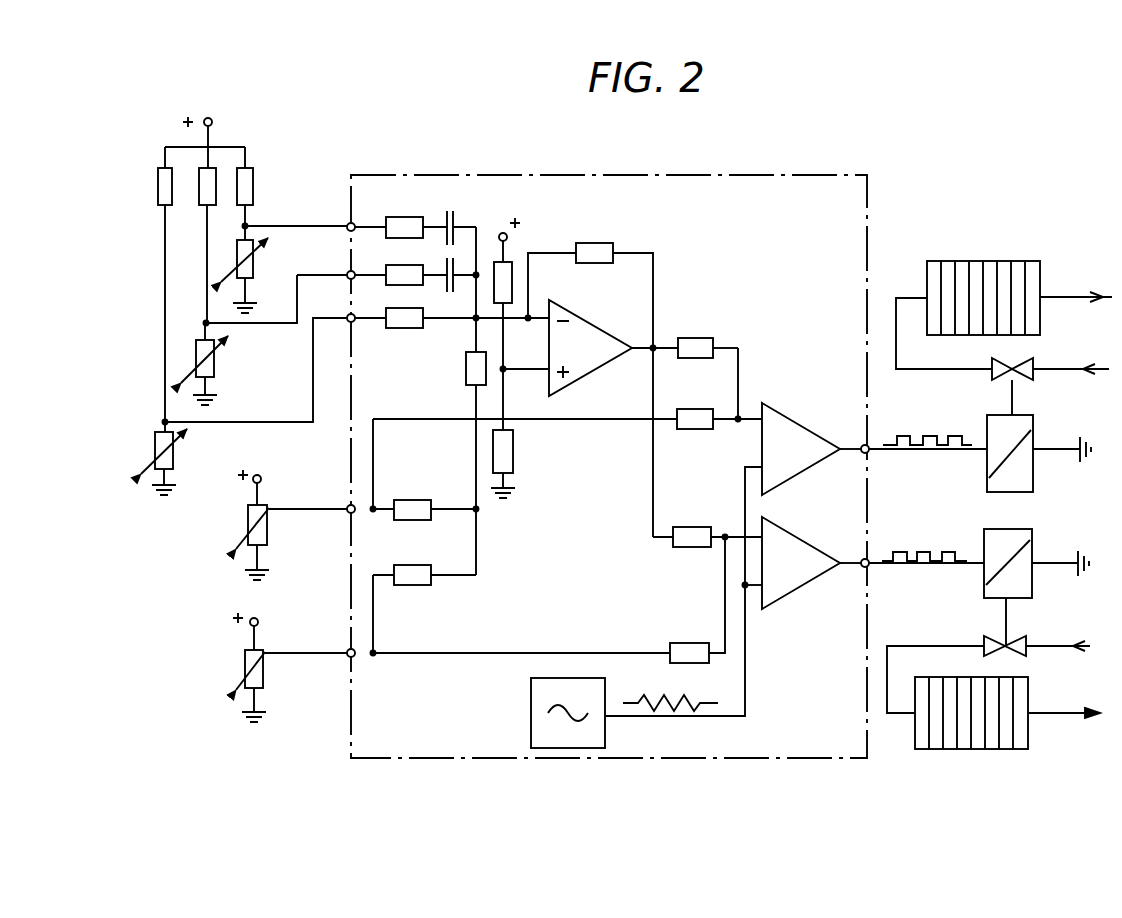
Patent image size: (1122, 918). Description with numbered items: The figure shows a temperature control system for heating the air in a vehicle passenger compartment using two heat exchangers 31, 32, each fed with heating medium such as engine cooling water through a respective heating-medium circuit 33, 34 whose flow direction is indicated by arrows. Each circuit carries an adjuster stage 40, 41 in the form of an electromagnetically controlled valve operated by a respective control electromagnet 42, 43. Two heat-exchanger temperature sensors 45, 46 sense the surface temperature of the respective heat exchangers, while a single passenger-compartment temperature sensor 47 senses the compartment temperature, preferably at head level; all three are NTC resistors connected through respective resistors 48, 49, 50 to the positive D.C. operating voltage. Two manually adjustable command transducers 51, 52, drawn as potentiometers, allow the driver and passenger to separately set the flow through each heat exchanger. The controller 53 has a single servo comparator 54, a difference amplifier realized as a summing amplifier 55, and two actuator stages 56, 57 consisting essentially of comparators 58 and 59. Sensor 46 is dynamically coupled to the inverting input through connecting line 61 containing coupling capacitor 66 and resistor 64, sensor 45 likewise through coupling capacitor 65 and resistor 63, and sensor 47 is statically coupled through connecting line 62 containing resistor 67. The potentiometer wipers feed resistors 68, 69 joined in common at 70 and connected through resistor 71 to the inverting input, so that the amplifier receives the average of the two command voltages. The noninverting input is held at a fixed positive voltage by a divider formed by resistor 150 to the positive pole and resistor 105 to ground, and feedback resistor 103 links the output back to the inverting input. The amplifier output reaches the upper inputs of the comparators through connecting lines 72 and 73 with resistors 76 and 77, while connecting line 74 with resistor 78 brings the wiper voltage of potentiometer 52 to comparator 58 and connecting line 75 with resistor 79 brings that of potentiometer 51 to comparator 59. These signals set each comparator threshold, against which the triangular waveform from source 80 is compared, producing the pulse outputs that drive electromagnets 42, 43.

The heat exchanger 31 is at (967, 262).
The heat exchanger 32 is at (982, 750).
The heating-medium circuit 33 is at (1068, 297).
The heating-medium circuit 34 is at (1045, 645).
The adjuster stage 40 is at (998, 395).
The adjuster stage 41 is at (998, 612).
The control electromagnet 42 is at (987, 478).
The control electromagnet 43 is at (985, 529).
The heat-exchanger temperature sensor 45 is at (250, 273).
The heat-exchanger temperature sensor 46 is at (214, 370).
The passenger-compartment temperature sensor 47 is at (154, 444).
The resistor 48 is at (246, 183).
The resistor 49 is at (207, 190).
The resistor 50 is at (159, 186).
The command transducer 51 is at (245, 660).
The command transducer 52 is at (248, 512).
The controller 53 is at (857, 218).
The servo comparator 54 is at (636, 296).
The summing amplifier 55 is at (597, 363).
The actuator stage 56 is at (830, 408).
The actuator stage 57 is at (835, 517).
The comparator 58 is at (770, 442).
The comparator 59 is at (780, 591).
The connecting line 61 is at (271, 325).
The connecting line 62 is at (262, 424).
The resistor 63 is at (419, 205).
The resistor 64 is at (399, 272).
The coupling capacitor 65 is at (454, 218).
The coupling capacitor 66 is at (441, 285).
The resistor 67 is at (410, 329).
The resistor 68 is at (405, 513).
The resistor 69 is at (421, 586).
The common connection point 70 is at (478, 512).
The resistor 71 is at (470, 379).
The connecting line 72 is at (740, 389).
The connecting line 73 is at (655, 387).
The connecting line 74 is at (584, 421).
The connecting line 75 is at (588, 632).
The resistor 76 is at (706, 340).
The resistor 77 is at (688, 541).
The resistor 78 is at (681, 425).
The resistor 79 is at (690, 647).
The triangular voltage waveform source 80 is at (537, 707).
The feedback resistor 103 is at (610, 246).
The resistor 105 is at (494, 448).
The resistor 150 is at (503, 281).